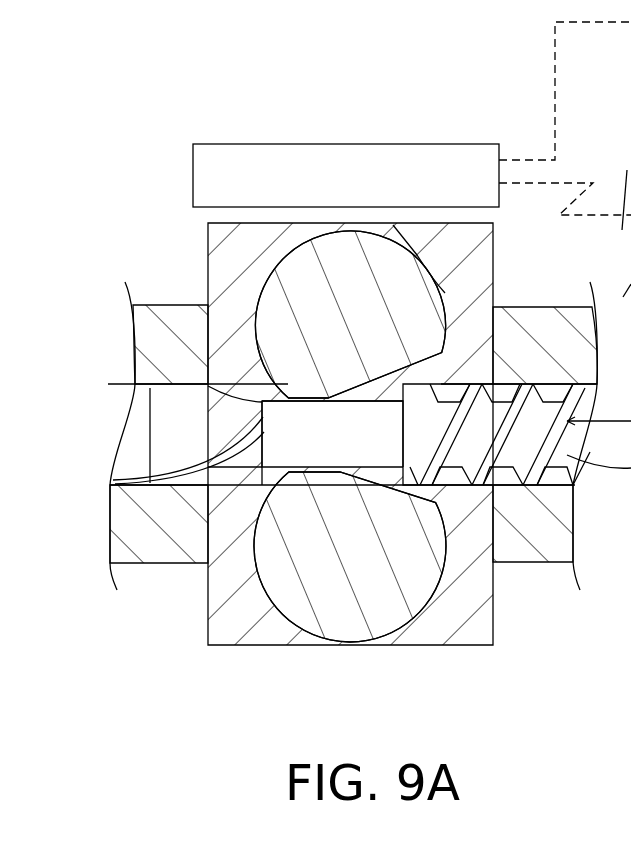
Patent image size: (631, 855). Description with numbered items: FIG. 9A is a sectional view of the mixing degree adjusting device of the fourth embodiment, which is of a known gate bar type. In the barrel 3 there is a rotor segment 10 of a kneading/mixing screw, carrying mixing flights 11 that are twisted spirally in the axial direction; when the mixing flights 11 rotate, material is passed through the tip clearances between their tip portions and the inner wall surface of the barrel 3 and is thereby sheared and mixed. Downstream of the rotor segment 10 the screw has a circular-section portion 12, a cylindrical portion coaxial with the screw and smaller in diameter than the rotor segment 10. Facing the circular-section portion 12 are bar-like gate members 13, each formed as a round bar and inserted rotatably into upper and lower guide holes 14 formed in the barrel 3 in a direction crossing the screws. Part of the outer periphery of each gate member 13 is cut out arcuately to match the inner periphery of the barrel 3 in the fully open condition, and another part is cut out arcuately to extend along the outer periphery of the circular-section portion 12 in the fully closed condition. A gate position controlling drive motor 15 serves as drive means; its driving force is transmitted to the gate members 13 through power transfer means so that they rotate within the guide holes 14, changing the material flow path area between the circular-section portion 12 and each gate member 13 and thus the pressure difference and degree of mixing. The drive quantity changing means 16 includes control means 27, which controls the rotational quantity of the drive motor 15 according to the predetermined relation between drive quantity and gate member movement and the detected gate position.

The barrel 3 is at (137, 563).
The rotor segment 10 is at (130, 466).
The mixing flight 11 is at (133, 407).
The circular-section portion 12 is at (238, 647).
The gate member 13 is at (443, 308).
The guide hole 14 is at (440, 290).
The gate position controlling drive motor 15 is at (630, 285).
The drive quantity changing means 16 is at (464, 121).
The control means 27 is at (397, 144).